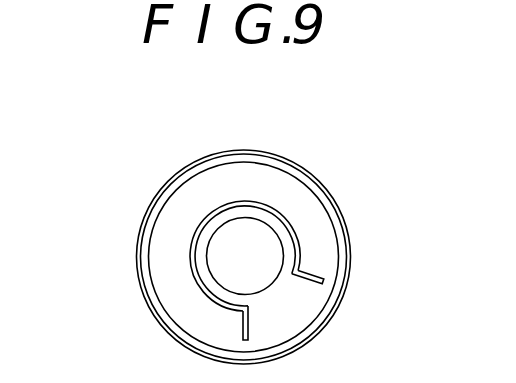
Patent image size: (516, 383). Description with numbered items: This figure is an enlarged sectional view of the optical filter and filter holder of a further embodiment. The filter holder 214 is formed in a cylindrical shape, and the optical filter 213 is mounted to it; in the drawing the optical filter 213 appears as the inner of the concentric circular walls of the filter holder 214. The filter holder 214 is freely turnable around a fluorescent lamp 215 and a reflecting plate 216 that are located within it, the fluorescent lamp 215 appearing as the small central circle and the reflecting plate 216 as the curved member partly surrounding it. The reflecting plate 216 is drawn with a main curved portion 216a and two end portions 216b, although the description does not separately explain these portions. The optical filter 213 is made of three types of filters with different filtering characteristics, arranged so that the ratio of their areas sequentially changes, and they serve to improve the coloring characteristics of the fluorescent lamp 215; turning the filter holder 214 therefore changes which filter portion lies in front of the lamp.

The optical filter 213 is at (338, 215).
The filter holder 214 is at (255, 150).
The fluorescent lamp 215 is at (217, 245).
The reflecting plate 216 is at (248, 278).
The body of spring member 216a is at (303, 310).
The end tabs of spring member 216b is at (318, 280).